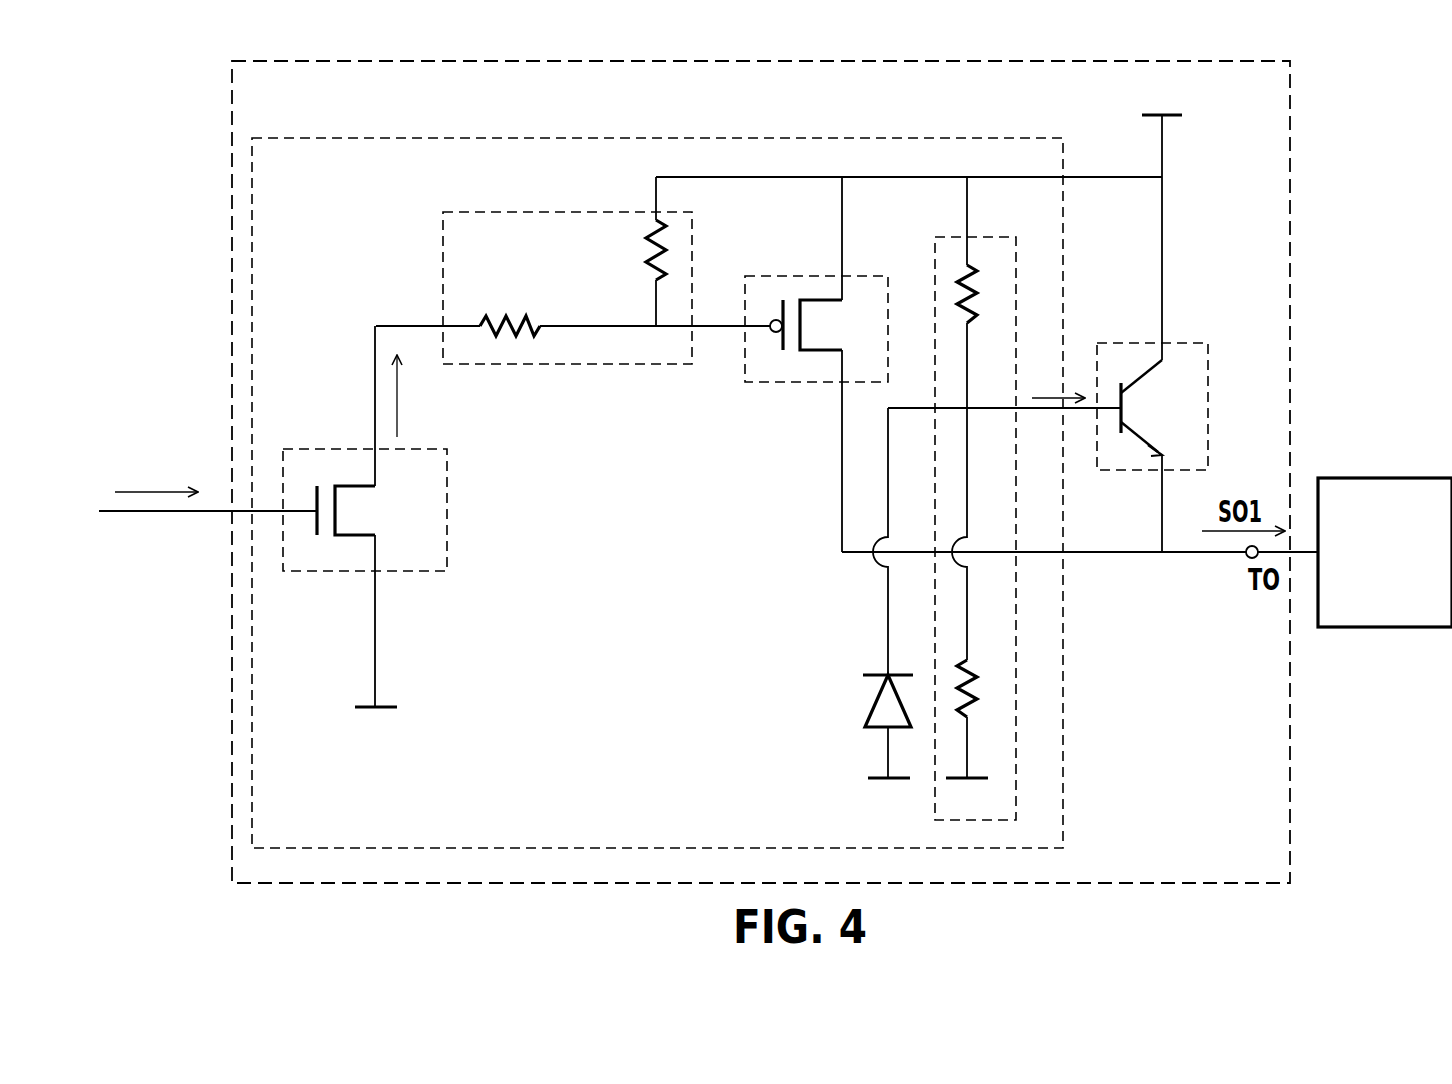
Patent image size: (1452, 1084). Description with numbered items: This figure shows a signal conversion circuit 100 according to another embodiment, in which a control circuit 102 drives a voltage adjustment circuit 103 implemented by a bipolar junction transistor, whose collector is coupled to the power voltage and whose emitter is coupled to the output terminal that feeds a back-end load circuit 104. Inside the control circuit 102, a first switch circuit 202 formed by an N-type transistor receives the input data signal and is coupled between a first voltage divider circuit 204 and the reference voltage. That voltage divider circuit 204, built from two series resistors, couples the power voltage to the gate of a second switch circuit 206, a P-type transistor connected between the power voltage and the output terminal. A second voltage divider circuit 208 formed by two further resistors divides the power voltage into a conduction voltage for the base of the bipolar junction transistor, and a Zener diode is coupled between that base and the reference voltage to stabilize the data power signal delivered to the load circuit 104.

The signal conversion circuit 100 is at (232, 108).
The control circuit 102 is at (426, 138).
The voltage adjustment circuit 103 is at (1208, 390).
The load circuit 104 is at (1395, 478).
The switch circuit 202 is at (447, 527).
The voltage divider circuit 204 is at (443, 255).
The switch circuit 206 is at (780, 385).
The voltage divider circuit 208 is at (935, 260).